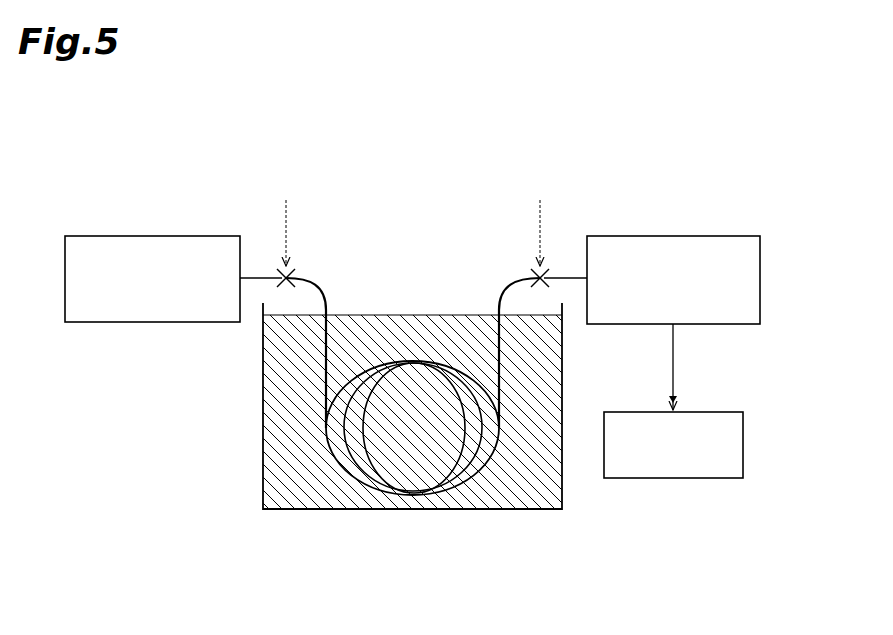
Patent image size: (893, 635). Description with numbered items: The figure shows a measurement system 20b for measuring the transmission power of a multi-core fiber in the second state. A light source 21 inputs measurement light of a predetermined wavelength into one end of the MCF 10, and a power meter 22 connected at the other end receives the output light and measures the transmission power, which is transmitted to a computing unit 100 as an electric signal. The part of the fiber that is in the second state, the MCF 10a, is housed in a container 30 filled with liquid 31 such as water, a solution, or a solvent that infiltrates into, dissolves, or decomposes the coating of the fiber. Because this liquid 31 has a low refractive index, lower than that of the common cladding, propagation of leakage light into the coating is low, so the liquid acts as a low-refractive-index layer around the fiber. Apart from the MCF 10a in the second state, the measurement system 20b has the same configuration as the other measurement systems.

The measurement system 20b is at (428, 174).
The light source 21 is at (148, 253).
The power meter 22 is at (663, 253).
The computing unit 100 is at (743, 443).
The MCF 10 is at (372, 415).
The MCF in the second state 10a is at (485, 482).
The container 30 is at (542, 379).
The liquid 31 is at (315, 494).